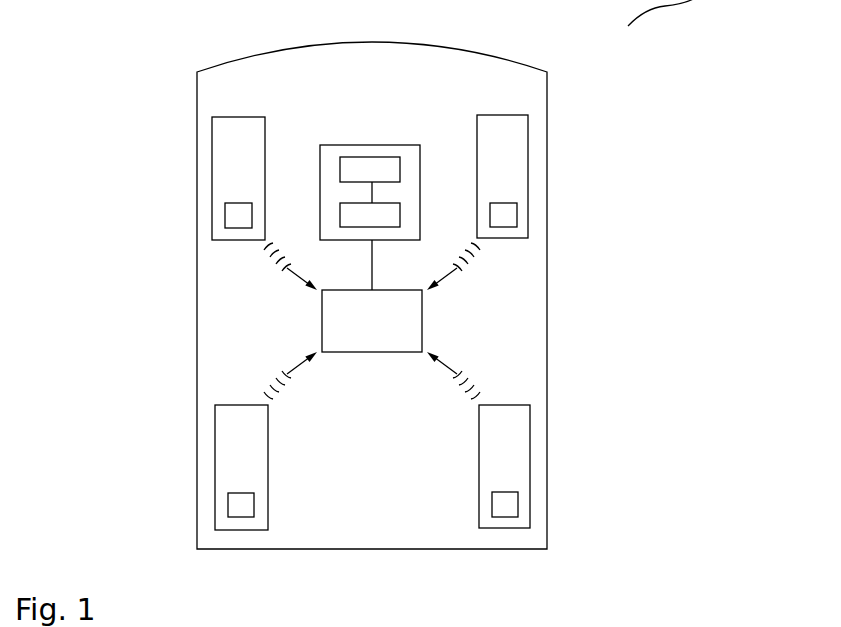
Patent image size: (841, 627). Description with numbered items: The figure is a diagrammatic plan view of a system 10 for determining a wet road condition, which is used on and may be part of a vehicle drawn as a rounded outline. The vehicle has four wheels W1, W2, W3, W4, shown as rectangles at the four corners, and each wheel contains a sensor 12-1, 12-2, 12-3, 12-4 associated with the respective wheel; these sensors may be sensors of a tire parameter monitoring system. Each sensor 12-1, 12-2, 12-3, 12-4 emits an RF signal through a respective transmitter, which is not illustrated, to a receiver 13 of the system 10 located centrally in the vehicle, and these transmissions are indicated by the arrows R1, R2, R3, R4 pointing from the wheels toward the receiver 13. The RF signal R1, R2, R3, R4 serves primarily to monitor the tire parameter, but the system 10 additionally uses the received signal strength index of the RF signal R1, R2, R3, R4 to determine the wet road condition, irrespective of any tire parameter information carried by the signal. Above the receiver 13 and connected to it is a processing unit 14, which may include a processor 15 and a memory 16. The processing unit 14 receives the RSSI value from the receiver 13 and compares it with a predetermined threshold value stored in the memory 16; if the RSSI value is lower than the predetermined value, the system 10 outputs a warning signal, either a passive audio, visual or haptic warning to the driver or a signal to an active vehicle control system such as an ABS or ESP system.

The system 10 is at (322, 122).
The wheel W1 is at (235, 142).
The wheel W2 is at (505, 141).
The wheel W3 is at (235, 432).
The wheel W4 is at (508, 432).
The sensor 12-1 is at (238, 215).
The sensor 12-2 is at (508, 213).
The sensor 12-3 is at (238, 504).
The sensor 12-4 is at (510, 503).
The receiver 13 is at (322, 320).
The processing unit 14 is at (408, 145).
The processor 15 is at (340, 213).
The memory 16 is at (340, 170).
The RF signal R1 is at (285, 274).
The RF signal R2 is at (459, 272).
The RF signal R3 is at (285, 374).
The RF signal R4 is at (459, 374).